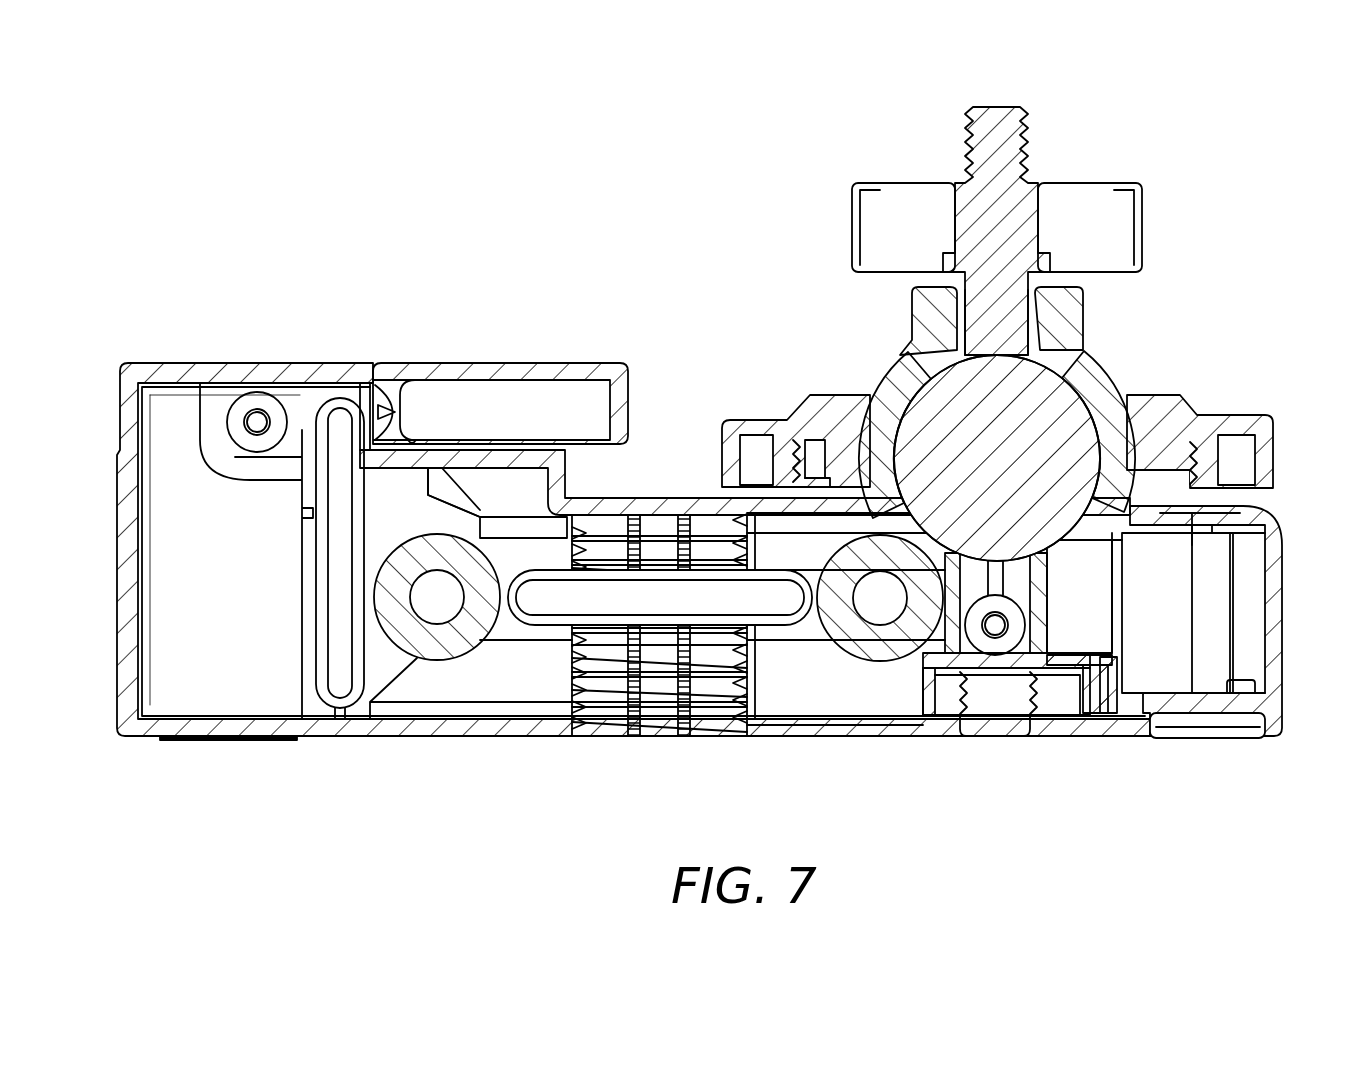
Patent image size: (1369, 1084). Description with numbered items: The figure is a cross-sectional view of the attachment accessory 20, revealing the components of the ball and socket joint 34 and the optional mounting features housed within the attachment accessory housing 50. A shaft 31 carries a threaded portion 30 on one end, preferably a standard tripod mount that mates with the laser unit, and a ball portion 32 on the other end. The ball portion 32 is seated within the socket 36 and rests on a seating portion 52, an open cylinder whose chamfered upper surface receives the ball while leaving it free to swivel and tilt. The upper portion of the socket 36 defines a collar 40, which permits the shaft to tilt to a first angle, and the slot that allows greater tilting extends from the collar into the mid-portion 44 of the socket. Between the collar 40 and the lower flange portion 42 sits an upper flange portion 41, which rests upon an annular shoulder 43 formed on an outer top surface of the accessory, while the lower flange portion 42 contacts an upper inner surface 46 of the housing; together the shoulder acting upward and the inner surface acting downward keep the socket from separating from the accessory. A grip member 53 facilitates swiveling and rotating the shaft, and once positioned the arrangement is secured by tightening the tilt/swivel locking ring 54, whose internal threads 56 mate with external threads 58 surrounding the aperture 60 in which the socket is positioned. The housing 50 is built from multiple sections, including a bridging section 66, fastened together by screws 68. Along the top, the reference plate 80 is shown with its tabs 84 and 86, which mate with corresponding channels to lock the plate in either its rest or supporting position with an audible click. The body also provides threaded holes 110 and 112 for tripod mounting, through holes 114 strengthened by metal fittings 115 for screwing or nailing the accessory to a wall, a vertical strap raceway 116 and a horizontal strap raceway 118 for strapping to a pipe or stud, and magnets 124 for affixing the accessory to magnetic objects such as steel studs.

The attachment accessory 20 is at (338, 802).
The threaded portion 30 is at (1028, 140).
The shaft 31 is at (995, 283).
The ball portion 32 is at (1095, 368).
The ball and socket joint 34 is at (1135, 296).
The socket 36 is at (900, 367).
The collar 40 is at (912, 318).
The upper flange portion 41 is at (797, 460).
The lower flange portion 42 is at (1150, 537).
The annular shoulder 43 is at (1212, 533).
The mid-portion of the socket 44 is at (1123, 402).
The upper inner surface 46 is at (1140, 493).
The attachment accessory housing 50 is at (1280, 680).
The seating portion 52 is at (1047, 594).
The grip member 53 is at (1143, 228).
The tilt/swivel locking ring 54 is at (830, 410).
The internal threads 56 is at (1190, 420).
The external threads 58 is at (1225, 470).
The aperture 60 is at (827, 487).
The bridging section 66 is at (1200, 738).
The screws 68 is at (257, 420).
The reference plate 80 is at (494, 378).
The tab 84 is at (375, 408).
The tab 86 is at (405, 460).
The threaded hole 110 is at (1010, 700).
The threaded hole 112 is at (727, 700).
The through holes 114 is at (452, 610).
The fittings 115 is at (428, 645).
The vertical strap raceway 116 is at (340, 677).
The horizontal strap raceway 118 is at (545, 597).
The magnets 124 is at (185, 617).